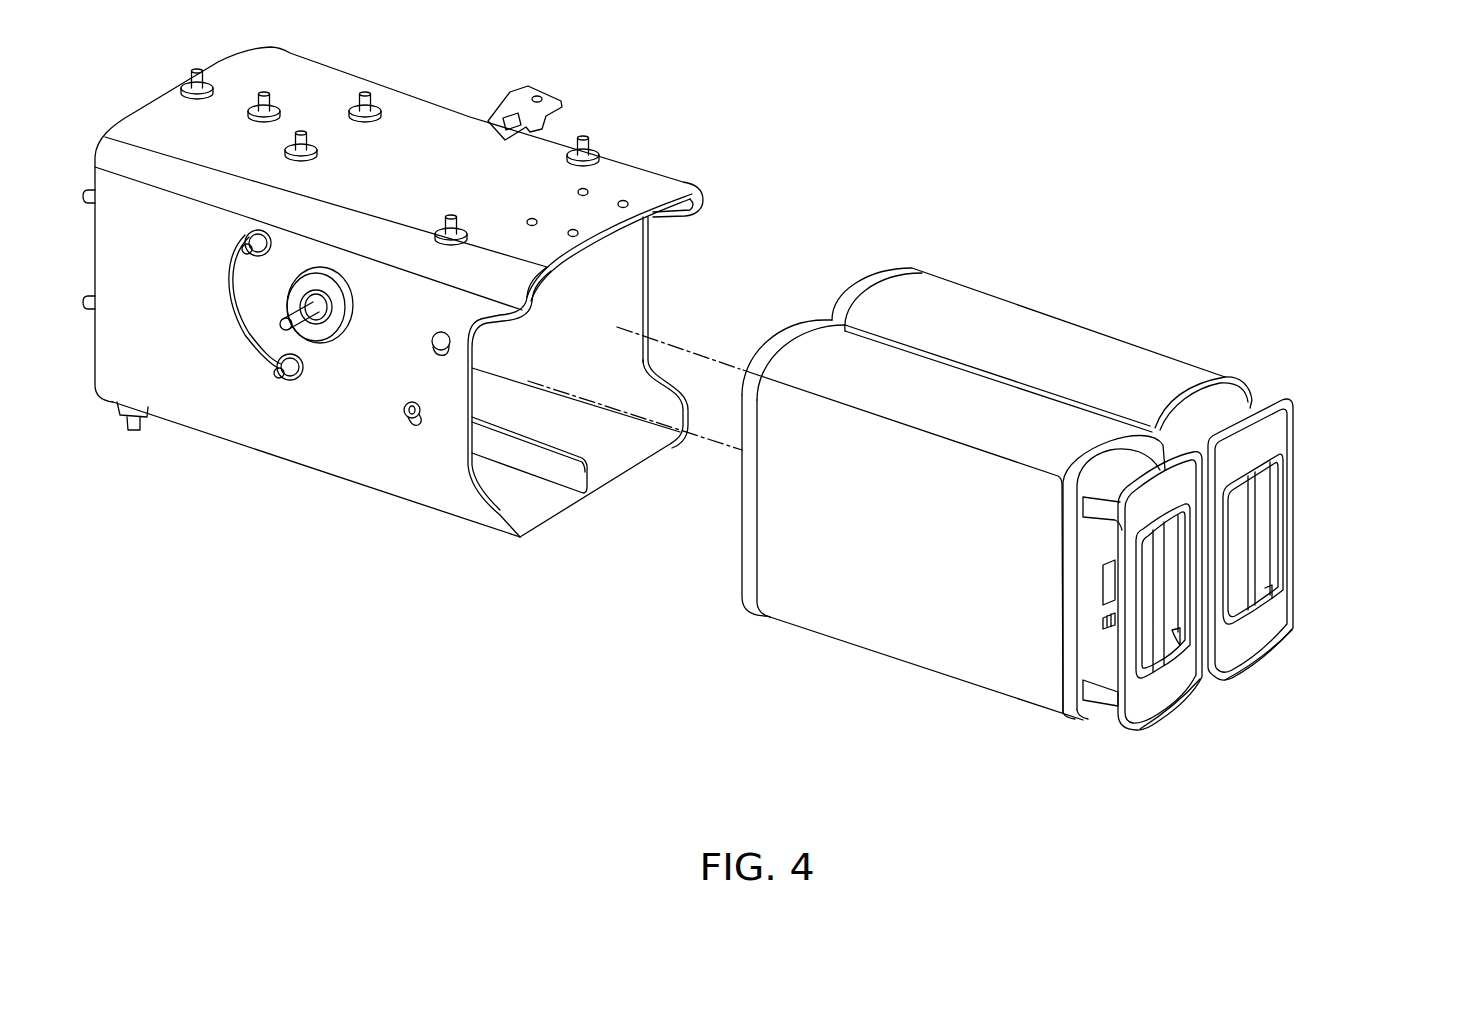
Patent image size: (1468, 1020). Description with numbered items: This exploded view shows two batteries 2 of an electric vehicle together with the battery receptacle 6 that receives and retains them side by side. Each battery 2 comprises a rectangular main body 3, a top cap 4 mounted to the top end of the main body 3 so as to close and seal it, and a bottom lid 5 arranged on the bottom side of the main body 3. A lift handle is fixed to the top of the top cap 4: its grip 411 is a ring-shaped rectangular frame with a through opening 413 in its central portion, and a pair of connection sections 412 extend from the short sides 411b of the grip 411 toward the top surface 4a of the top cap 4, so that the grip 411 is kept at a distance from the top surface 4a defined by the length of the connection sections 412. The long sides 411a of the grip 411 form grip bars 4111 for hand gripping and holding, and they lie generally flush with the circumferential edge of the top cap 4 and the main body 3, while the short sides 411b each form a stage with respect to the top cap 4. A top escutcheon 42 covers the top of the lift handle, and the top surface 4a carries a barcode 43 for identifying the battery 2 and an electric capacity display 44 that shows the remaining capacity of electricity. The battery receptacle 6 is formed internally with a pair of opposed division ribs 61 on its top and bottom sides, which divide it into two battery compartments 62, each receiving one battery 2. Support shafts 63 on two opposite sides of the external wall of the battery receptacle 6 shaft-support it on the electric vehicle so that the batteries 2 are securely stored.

The battery 2 is at (1097, 518).
The main body 3 is at (997, 467).
The top cap 4 is at (1176, 549).
The top surface 4a is at (1092, 537).
The bottom lid 5 is at (872, 283).
The battery receptacle 6 is at (393, 319).
The division ribs 61 is at (577, 465).
The battery compartments 62 is at (538, 505).
The support shafts 63 is at (282, 326).
The grip 411 is at (1249, 610).
The grip bars 4111 is at (1249, 637).
The long sides 411a is at (1292, 500).
The short sides 411b is at (1172, 717).
The connection sections 412 is at (1123, 477).
The through opening 413 is at (1258, 557).
The top escutcheon 42 is at (1249, 610).
The barcode 43 is at (1100, 580).
The electric capacity display 44 is at (1112, 620).